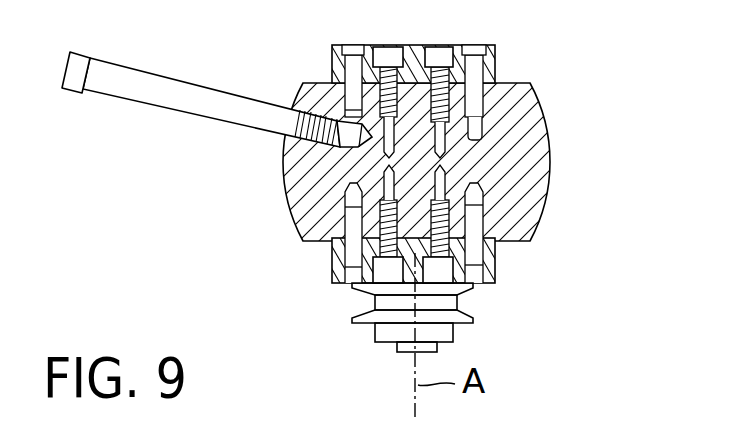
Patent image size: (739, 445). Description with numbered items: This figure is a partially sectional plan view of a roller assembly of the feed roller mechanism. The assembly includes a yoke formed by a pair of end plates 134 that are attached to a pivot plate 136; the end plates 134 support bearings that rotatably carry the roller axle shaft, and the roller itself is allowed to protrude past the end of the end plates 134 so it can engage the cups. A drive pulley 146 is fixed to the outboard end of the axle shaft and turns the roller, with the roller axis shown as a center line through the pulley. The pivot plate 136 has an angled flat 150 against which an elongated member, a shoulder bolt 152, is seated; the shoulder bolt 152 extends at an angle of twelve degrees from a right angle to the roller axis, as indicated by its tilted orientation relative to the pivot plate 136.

The end plates 134 is at (333, 60).
The pivot plate 136 is at (542, 104).
The drive pulley 146 is at (348, 321).
The angled flat 150 is at (286, 167).
The shoulder bolt 152 is at (109, 92).